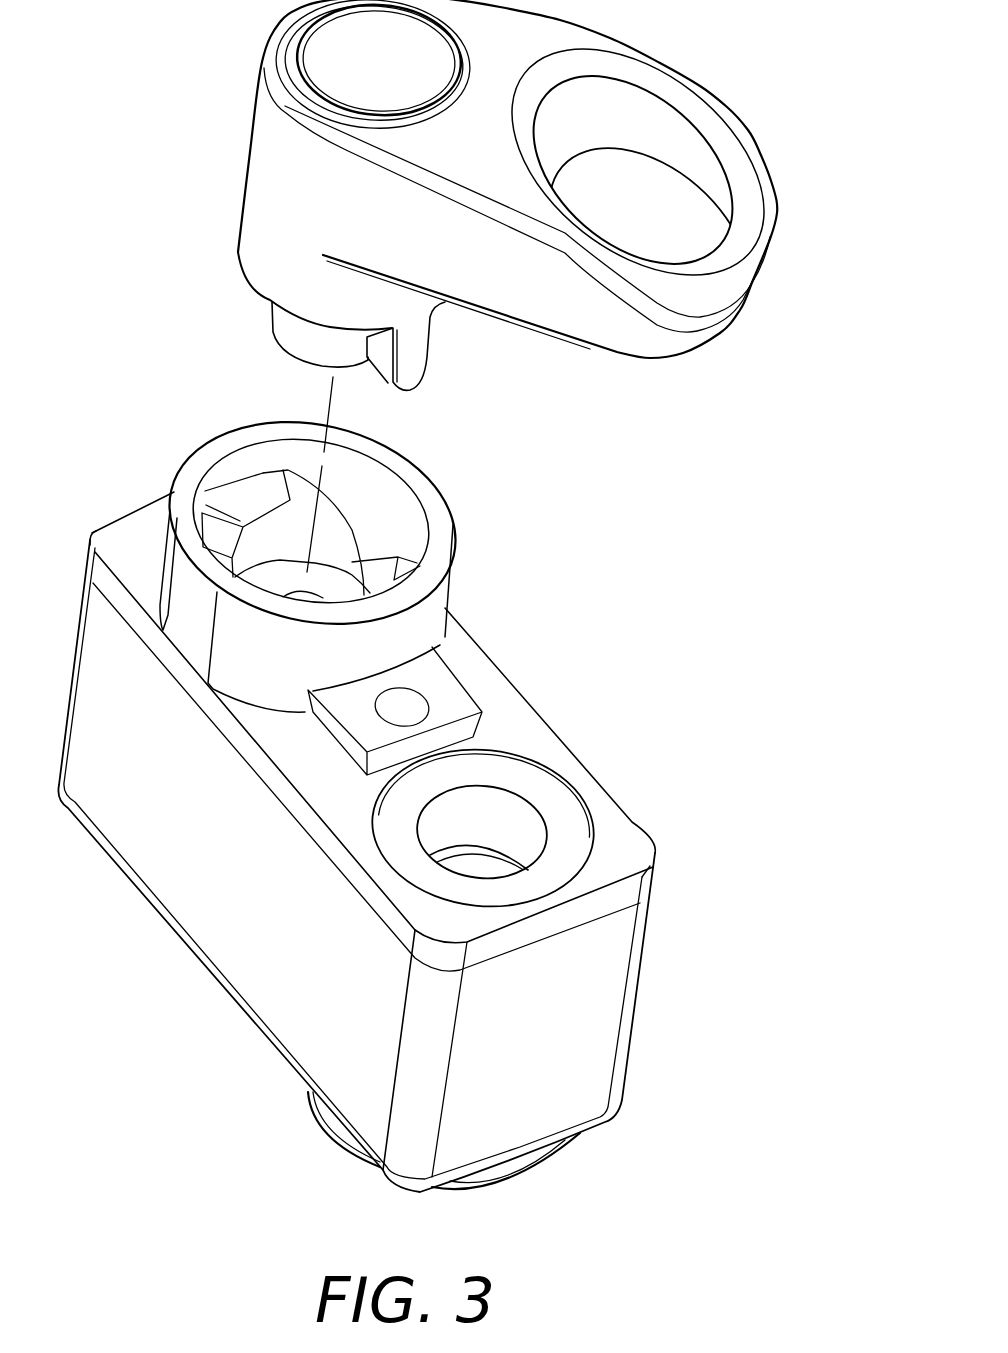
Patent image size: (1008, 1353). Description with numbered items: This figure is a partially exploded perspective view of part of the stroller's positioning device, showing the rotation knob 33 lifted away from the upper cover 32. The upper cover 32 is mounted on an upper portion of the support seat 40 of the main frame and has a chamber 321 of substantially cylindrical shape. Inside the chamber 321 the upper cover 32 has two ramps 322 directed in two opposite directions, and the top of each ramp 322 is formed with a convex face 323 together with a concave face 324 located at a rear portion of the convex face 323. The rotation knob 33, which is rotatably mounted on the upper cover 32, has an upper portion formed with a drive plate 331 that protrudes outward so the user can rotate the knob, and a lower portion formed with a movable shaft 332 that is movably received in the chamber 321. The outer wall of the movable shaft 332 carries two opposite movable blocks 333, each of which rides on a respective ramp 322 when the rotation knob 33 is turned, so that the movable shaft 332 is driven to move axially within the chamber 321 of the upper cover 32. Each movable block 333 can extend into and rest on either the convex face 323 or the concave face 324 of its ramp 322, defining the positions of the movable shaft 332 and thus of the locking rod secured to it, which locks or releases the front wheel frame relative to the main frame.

The upper cover 32 is at (493, 702).
The chamber 321 is at (378, 494).
The ramps 322 is at (353, 538).
The convex face 323 is at (290, 498).
The concave face 324 is at (253, 500).
The rotation knob 33 is at (296, 180).
The drive plate 331 is at (720, 108).
The movable shaft 332 is at (297, 328).
The movable blocks 333 is at (410, 348).
The support seat 40 is at (582, 1018).